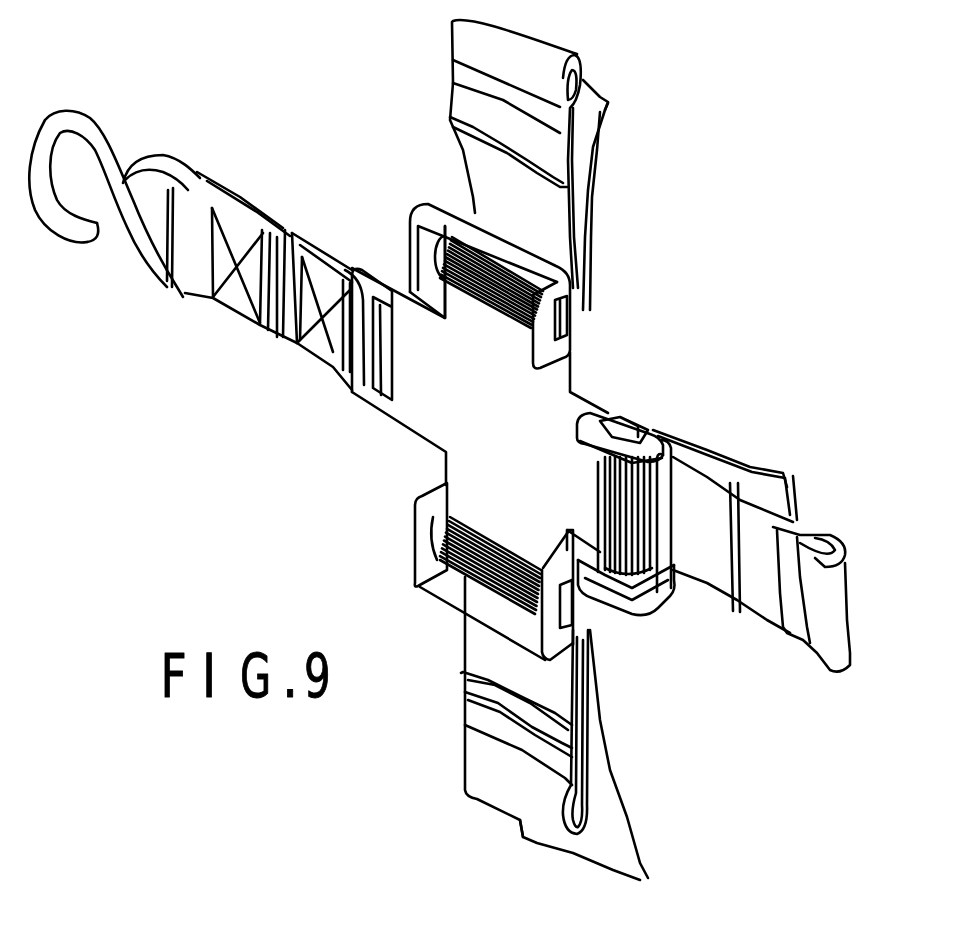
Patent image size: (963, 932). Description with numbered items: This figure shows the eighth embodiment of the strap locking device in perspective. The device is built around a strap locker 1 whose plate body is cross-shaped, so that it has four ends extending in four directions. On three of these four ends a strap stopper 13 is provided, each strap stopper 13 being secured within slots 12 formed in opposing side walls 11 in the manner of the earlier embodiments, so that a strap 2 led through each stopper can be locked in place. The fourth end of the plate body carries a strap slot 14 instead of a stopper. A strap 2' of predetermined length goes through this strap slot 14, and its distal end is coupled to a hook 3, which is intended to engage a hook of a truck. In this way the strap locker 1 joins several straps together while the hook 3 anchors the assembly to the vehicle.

The strap locker 1 is at (418, 410).
The strap 2 is at (564, 165).
The strap 2' is at (237, 293).
The hook 3 is at (157, 278).
The side wall 11 is at (568, 287).
The slot 12 is at (567, 347).
The strap stopper 13 is at (505, 285).
The strap slot 14 is at (378, 392).